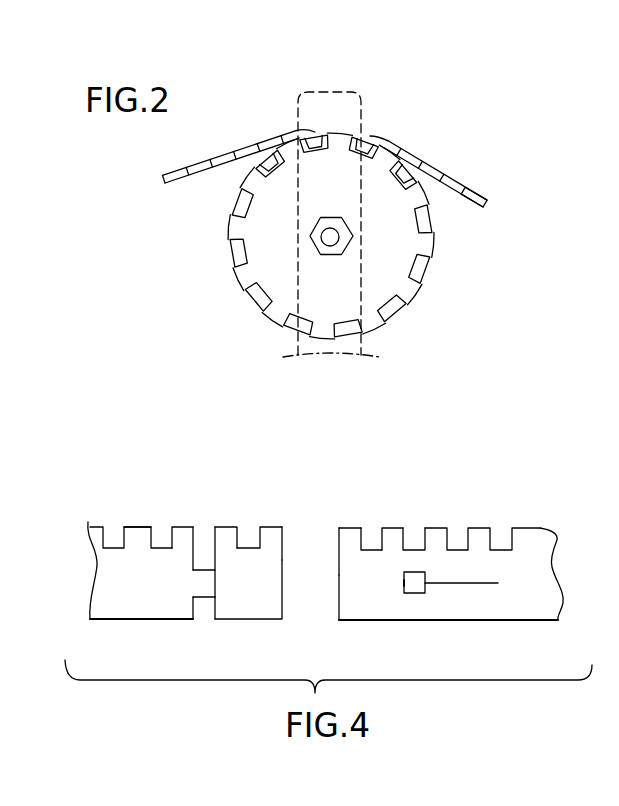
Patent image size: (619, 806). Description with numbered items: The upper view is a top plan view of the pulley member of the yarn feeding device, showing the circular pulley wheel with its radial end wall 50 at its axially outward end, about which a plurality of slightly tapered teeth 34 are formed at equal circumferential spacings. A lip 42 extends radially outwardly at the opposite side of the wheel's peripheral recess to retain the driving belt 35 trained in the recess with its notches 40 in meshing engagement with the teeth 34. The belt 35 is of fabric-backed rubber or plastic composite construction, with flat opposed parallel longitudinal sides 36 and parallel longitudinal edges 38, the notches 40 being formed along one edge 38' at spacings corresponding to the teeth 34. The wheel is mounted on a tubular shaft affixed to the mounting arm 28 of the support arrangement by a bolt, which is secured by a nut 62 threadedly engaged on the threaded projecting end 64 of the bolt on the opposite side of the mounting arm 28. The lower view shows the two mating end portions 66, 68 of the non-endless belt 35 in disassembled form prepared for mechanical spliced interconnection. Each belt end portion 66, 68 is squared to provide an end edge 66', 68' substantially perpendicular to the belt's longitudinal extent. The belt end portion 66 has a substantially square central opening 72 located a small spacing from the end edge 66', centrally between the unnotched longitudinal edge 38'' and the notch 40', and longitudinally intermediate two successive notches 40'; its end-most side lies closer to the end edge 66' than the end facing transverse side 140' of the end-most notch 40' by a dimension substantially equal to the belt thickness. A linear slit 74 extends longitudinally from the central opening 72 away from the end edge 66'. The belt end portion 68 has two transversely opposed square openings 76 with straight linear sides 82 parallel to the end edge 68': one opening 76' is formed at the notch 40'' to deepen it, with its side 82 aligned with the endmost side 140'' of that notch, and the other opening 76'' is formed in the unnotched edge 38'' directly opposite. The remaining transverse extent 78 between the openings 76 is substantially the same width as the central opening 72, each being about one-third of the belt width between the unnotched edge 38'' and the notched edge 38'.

In FIG. 2, the mounting arm 28 is at (384, 320).
In FIG. 2, the teeth 34 is at (237, 272).
In FIG. 2, the driving belt 35 is at (186, 170).
In FIG. 4, the driving belt 35 is at (100, 570).
In FIG. 2, the longitudinal sides 36 is at (440, 183).
In FIG. 4, the longitudinal sides 36 is at (134, 617).
In FIG. 2, the longitudinal edges 38 is at (231, 180).
In FIG. 2, the notched longitudinal edge 38' is at (494, 190).
In FIG. 4, the notched longitudinal edge 38' is at (238, 501).
In FIG. 4, the unnotched longitudinal edge 38'' is at (347, 640).
In FIG. 2, the notches 40 is at (332, 142).
In FIG. 4, the notches 40 is at (388, 513).
In FIG. 4, the notches of belt end portion 66 40' is at (422, 518).
In FIG. 4, the notch of belt end portion 68 40'' is at (198, 512).
In FIG. 2, the lip 42 is at (236, 248).
In FIG. 2, the radial end wall 50 is at (280, 245).
In FIG. 2, the nut 62 is at (347, 247).
In FIG. 2, the threaded projecting end 64 is at (339, 233).
In FIG. 4, the belt end portion 66 is at (365, 593).
In FIG. 4, the end edge 66' is at (318, 540).
In FIG. 4, the belt end portion 68 is at (253, 608).
In FIG. 4, the end edge 68' is at (305, 571).
In FIG. 4, the central opening 72 is at (413, 577).
In FIG. 4, the slit 74 is at (453, 585).
In FIG. 4, the openings 76 is at (229, 563).
In FIG. 4, the opening at notch 76' is at (169, 552).
In FIG. 4, the opening in unnotched edge 76'' is at (221, 627).
In FIG. 4, the remaining transverse extent 78 is at (197, 585).
In FIG. 4, the linear sides 82 is at (217, 612).
In FIG. 4, the end facing transverse side of notch 140' is at (387, 513).
In FIG. 4, the endmost side of notch 140'' is at (253, 507).